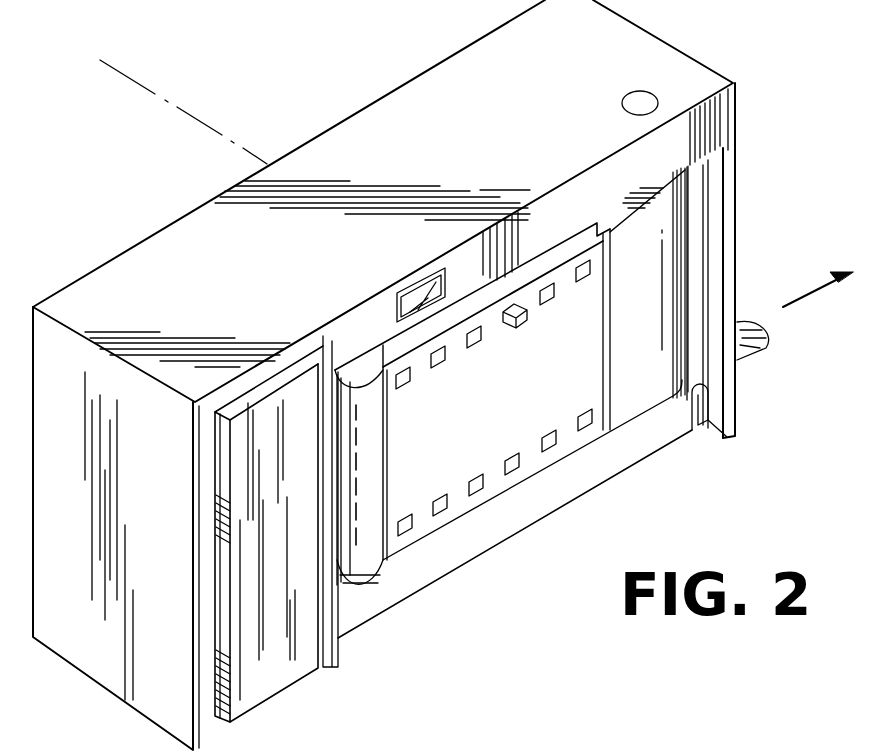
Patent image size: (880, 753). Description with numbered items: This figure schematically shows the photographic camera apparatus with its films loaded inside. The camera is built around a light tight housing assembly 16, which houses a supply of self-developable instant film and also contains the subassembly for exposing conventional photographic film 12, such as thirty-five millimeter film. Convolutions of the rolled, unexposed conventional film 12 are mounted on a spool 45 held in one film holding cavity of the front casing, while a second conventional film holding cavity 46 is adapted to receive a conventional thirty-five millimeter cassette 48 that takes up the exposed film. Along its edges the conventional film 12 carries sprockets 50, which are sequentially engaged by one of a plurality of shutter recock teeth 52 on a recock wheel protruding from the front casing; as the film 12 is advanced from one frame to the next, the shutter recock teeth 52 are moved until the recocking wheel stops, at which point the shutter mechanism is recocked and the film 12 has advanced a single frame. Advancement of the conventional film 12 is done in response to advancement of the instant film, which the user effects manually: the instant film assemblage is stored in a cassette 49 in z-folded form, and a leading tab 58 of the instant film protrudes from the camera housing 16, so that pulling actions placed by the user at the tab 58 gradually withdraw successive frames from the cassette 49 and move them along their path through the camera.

The conventional photographic film 12 is at (562, 277).
The light tight housing assembly 16 is at (672, 72).
The spool 45 is at (370, 453).
The conventional film holding cavity 46 is at (690, 184).
The conventional 35 mm cassette 48 is at (673, 262).
The cassette 49 is at (300, 658).
The sprockets 50 is at (587, 280).
The shutter recock teeth 52 is at (522, 322).
The leading tab 58 is at (765, 345).